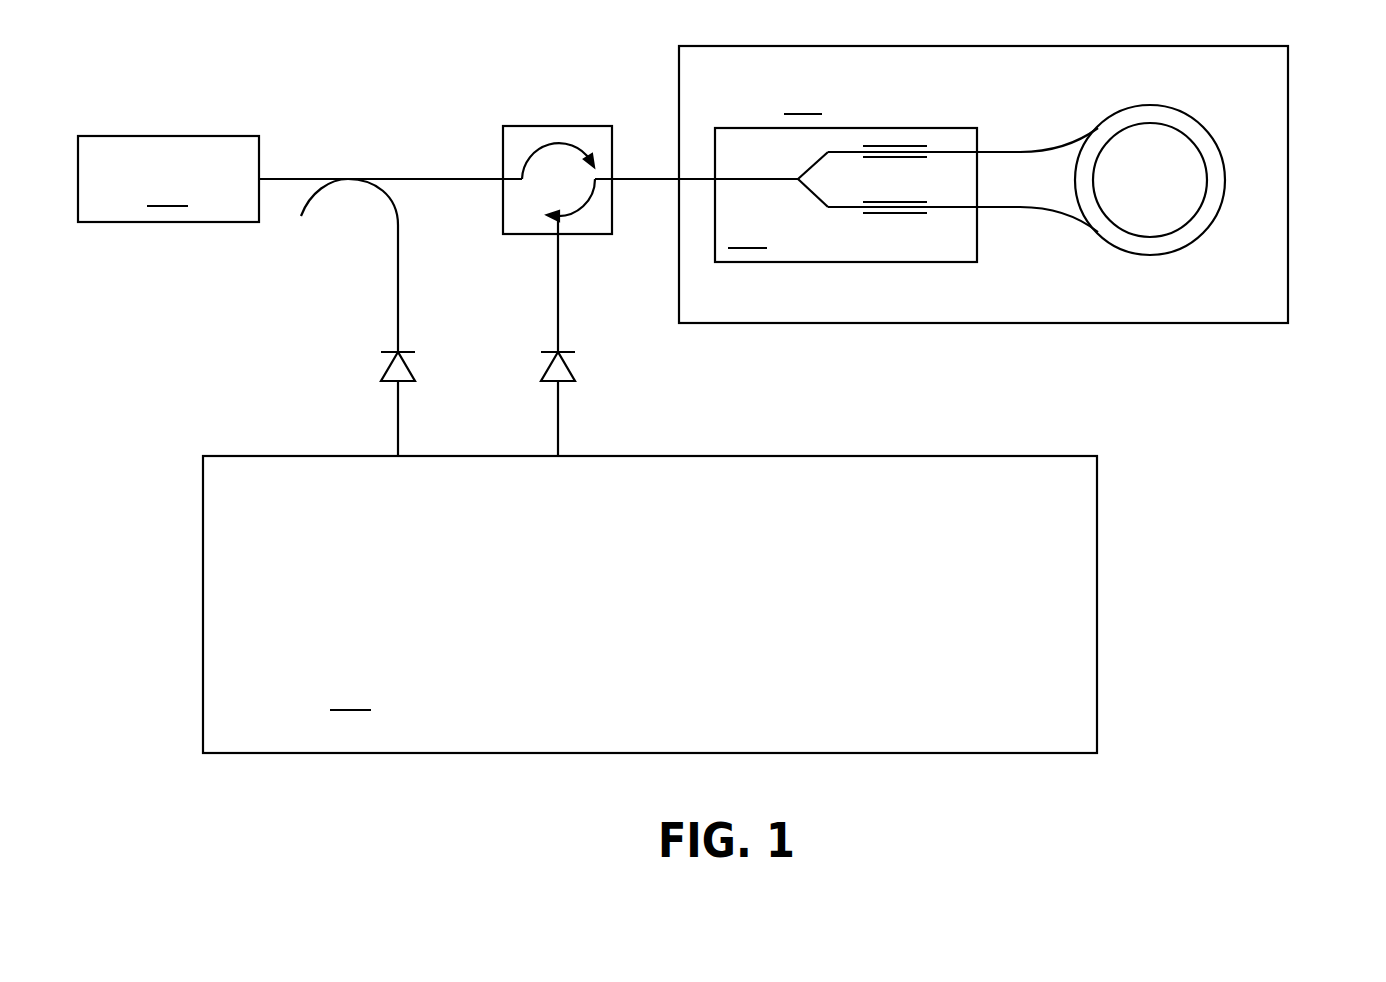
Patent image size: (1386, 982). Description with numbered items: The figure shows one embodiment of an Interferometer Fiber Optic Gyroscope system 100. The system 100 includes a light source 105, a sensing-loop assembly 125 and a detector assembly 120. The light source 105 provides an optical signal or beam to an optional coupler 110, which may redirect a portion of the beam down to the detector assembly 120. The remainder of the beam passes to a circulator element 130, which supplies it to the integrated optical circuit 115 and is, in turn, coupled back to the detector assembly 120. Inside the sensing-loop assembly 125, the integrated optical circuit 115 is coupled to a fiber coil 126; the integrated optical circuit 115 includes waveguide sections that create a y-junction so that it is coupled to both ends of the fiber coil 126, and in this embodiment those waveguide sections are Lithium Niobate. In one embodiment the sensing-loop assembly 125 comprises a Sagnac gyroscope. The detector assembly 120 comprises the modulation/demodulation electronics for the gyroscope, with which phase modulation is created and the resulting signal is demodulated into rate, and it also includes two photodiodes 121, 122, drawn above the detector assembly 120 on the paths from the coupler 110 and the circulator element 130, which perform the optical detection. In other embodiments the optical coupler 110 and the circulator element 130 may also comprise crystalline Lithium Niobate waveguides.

The Interferometer Fiber Optic Gyroscope (IFOG) system 100 is at (1304, 410).
The light source 105 is at (168, 179).
The optical coupler 110 is at (350, 179).
The integrated optical circuit (IOC) 115 is at (846, 195).
The detector assembly 120 is at (650, 604).
The photodiode 121 is at (382, 378).
The photodiode 122 is at (542, 378).
The sensing-loop assembly 125 is at (983, 184).
The fiber coil 126 is at (1203, 205).
The circulator element 130 is at (550, 126).